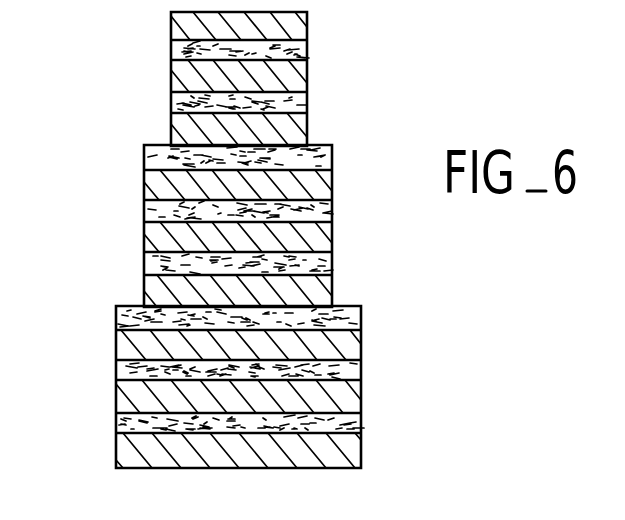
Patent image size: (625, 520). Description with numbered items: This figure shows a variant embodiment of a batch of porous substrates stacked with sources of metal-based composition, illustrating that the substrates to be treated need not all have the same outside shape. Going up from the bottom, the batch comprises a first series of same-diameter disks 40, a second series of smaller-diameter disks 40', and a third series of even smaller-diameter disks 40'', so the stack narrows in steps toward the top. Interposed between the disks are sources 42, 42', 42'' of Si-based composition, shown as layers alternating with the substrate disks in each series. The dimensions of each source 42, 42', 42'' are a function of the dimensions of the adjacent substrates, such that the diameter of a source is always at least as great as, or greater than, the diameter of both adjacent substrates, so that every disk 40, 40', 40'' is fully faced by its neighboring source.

The first series of same-diameter disks 40 is at (194, 399).
The source of Si-based composition 42 is at (276, 370).
The second series of smaller-diameter disks 40' is at (193, 238).
The source of Si-based composition 42' is at (280, 210).
The third series of even smaller-diameter disks 40'' is at (190, 79).
The source of Si-based composition 42'' is at (282, 75).